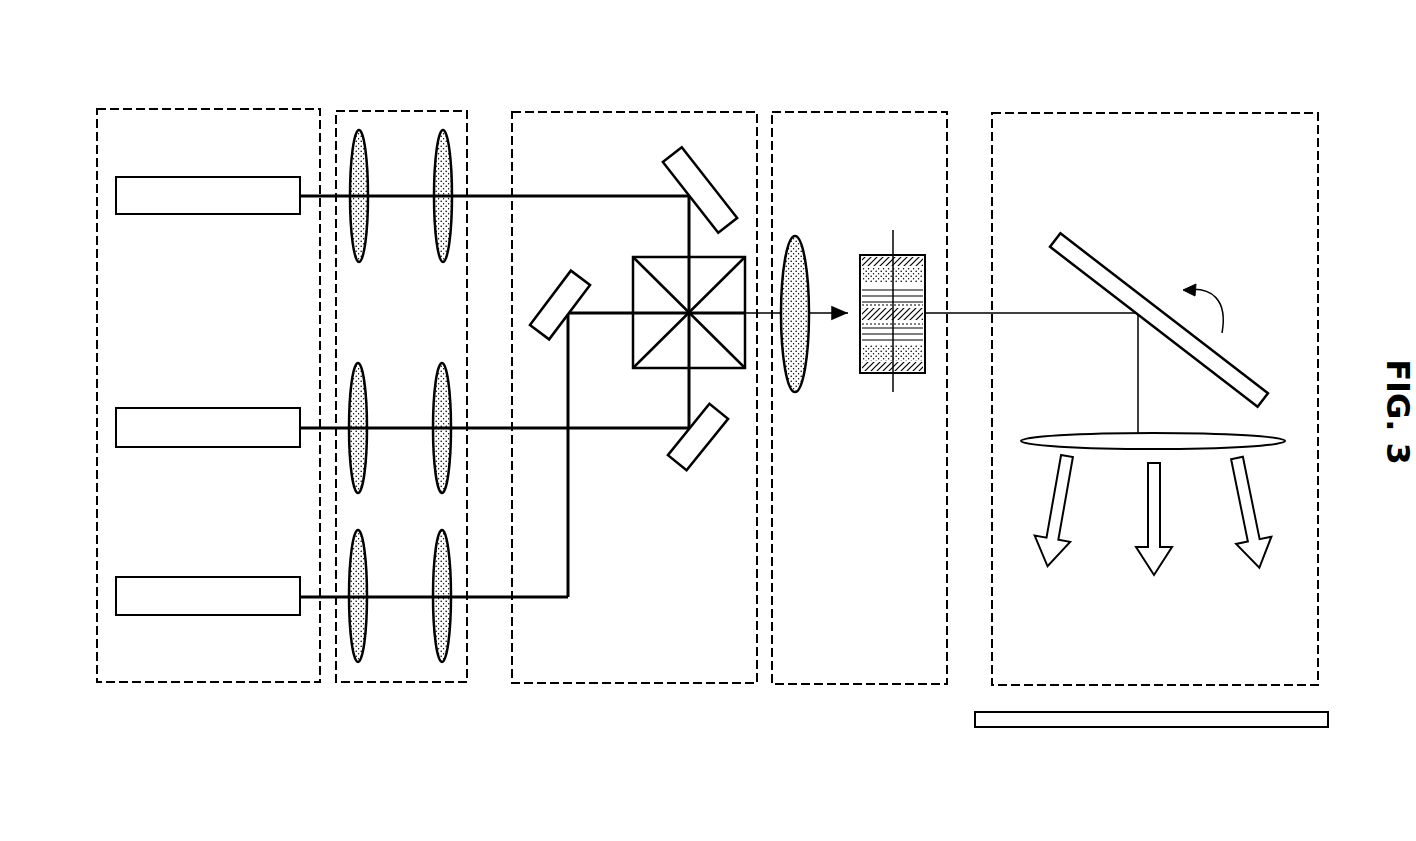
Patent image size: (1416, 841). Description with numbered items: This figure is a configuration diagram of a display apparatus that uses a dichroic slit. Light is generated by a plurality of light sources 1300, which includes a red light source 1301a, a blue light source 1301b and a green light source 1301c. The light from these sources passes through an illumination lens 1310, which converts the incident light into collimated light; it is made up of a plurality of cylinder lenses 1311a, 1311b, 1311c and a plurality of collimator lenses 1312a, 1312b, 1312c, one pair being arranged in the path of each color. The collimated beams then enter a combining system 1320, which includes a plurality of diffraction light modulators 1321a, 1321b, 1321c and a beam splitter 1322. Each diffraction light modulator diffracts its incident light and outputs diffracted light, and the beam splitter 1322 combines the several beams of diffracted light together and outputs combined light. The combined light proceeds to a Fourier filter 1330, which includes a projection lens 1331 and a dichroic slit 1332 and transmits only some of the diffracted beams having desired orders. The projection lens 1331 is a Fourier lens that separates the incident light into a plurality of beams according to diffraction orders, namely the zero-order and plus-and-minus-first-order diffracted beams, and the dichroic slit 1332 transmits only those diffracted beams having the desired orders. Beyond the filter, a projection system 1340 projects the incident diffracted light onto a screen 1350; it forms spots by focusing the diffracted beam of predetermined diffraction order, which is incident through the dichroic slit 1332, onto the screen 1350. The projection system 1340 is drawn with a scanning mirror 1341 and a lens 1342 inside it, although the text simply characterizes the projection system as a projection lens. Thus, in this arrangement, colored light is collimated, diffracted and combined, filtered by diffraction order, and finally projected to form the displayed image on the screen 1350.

The plurality of light sources 1300 is at (140, 109).
The red light source 1301a is at (238, 177).
The blue light source 1301b is at (238, 408).
The green light source 1301c is at (238, 577).
The illumination lens 1310 is at (353, 111).
The cylinder lens 1311a is at (367, 160).
The collimator lens 1312a is at (430, 237).
The cylinder lens 1311b is at (366, 392).
The collimator lens 1312b is at (430, 469).
The cylinder lens 1311c is at (366, 562).
The collimator lens 1312c is at (430, 637).
The combining system 1320 is at (580, 111).
The diffraction light modulator 1321a is at (700, 147).
The diffraction light modulator 1321b is at (556, 282).
The diffraction light modulator 1321c is at (697, 462).
The beam splitter 1322 is at (645, 369).
The Fourier filter 1330 is at (863, 112).
The projection lens 1331 is at (800, 248).
The dichroic slit 1332 is at (867, 255).
The projection system 1340 is at (1146, 113).
The scanning mirror 1341 is at (1108, 268).
The projection lens 1342 is at (1078, 433).
The screen 1350 is at (1232, 728).